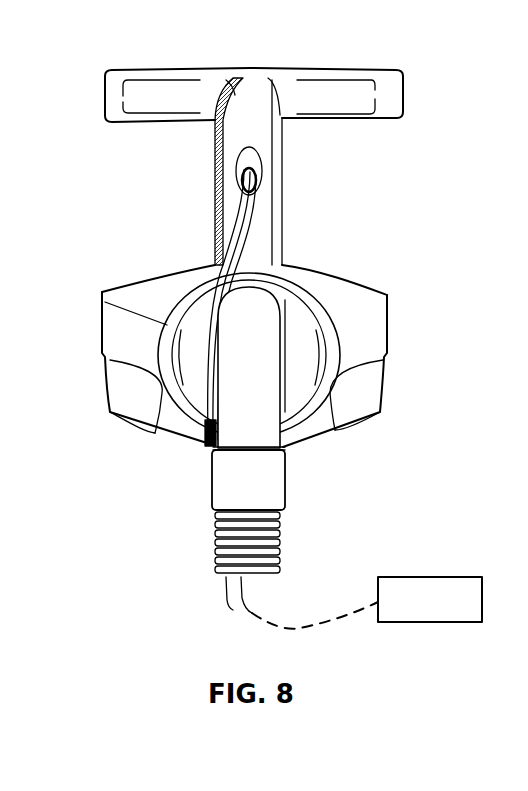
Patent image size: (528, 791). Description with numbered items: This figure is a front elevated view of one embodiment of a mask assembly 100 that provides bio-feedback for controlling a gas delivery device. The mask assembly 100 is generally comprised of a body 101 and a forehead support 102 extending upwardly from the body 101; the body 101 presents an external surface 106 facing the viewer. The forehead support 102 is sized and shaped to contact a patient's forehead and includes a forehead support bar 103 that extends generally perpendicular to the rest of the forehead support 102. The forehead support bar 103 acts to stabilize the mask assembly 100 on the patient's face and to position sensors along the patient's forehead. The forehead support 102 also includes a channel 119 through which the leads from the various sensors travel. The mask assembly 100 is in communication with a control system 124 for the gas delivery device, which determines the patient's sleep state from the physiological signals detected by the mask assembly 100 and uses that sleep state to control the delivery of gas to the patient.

The mask assembly 100 is at (347, 242).
The body 101 is at (358, 330).
The forehead support 102 is at (217, 200).
The forehead support bar 103 is at (302, 70).
The external surface 106 is at (103, 301).
The channel 119 is at (258, 182).
The control system 124 is at (428, 625).